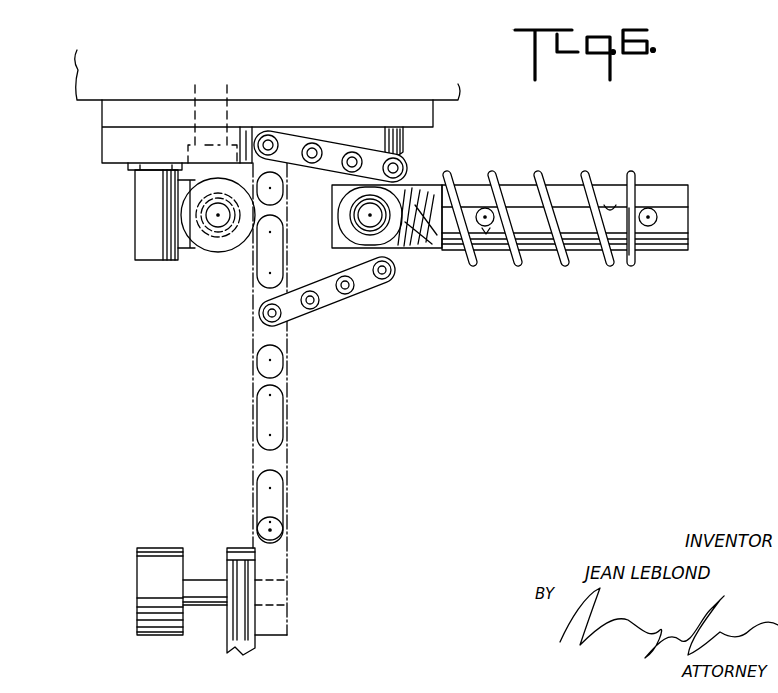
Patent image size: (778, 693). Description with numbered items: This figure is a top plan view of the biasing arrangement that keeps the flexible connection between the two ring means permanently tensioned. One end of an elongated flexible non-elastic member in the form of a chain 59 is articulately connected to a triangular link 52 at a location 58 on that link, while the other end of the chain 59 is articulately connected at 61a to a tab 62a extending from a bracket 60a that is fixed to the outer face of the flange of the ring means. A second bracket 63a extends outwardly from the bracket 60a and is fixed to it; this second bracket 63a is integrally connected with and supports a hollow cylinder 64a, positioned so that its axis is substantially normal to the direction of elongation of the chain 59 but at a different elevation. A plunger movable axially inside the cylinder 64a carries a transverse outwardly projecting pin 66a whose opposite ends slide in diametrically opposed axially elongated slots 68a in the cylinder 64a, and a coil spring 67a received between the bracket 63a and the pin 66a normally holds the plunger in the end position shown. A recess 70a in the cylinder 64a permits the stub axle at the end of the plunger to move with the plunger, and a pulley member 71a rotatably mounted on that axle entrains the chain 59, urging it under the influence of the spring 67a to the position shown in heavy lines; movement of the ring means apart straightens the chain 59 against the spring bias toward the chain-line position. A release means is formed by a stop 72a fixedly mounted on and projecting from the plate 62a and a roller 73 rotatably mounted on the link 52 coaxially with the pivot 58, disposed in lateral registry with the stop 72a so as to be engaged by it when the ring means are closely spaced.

The bracket 60a is at (367, 115).
The articulate connection 61a is at (270, 143).
The tab 62a is at (243, 133).
The second bracket 63a is at (405, 145).
The hollow cylinder 64a is at (680, 205).
The pin 66a is at (652, 210).
The coil spring 67a is at (538, 178).
The axially elongated slots 68a is at (607, 205).
The recess 70a is at (340, 200).
The pulley member 71a is at (216, 240).
The stop 72a is at (146, 230).
The chain 59 is at (362, 288).
The location 58 is at (278, 614).
The triangular link 52 is at (231, 548).
The roller 73 is at (145, 550).